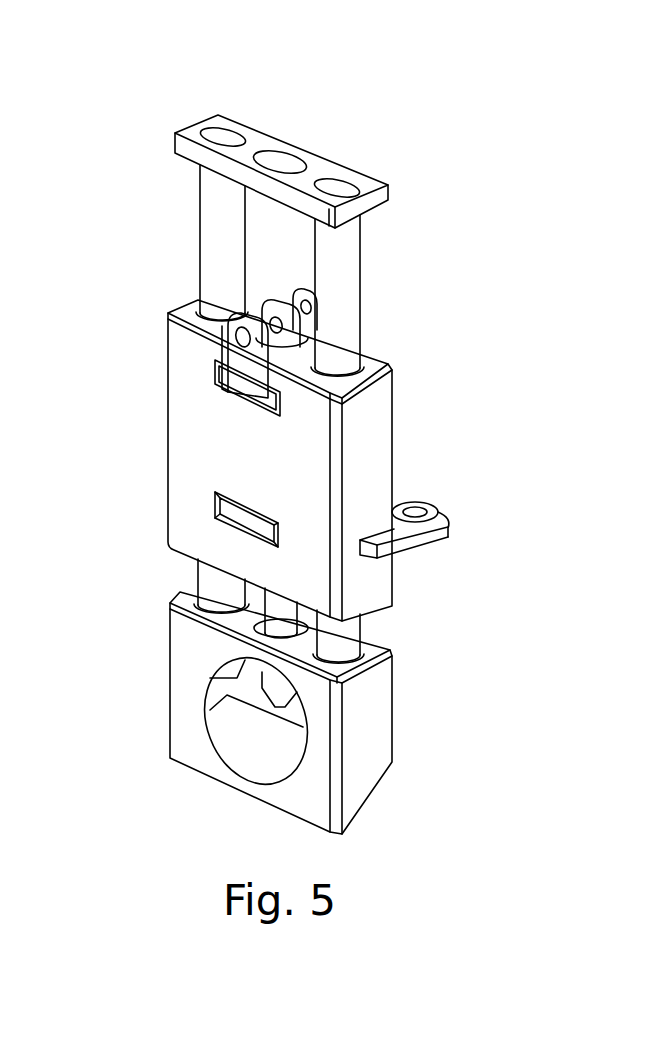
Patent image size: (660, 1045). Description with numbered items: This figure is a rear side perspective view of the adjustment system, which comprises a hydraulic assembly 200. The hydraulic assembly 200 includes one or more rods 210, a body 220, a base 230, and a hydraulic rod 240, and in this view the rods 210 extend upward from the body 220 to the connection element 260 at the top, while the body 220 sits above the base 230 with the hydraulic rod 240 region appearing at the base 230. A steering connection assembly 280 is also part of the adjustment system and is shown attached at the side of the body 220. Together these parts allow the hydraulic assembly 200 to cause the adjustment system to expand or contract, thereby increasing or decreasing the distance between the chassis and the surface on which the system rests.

The hydraulic assembly 200 is at (553, 140).
The rods 210 is at (213, 218).
The body 220 is at (378, 432).
The base 230 is at (296, 713).
The hydraulic rod 240 is at (228, 633).
The connection element 260 is at (387, 207).
The steering connection assembly 280 is at (452, 532).